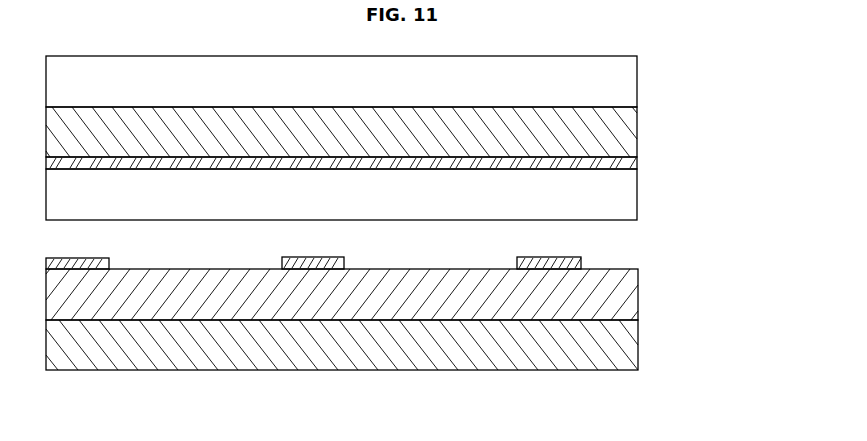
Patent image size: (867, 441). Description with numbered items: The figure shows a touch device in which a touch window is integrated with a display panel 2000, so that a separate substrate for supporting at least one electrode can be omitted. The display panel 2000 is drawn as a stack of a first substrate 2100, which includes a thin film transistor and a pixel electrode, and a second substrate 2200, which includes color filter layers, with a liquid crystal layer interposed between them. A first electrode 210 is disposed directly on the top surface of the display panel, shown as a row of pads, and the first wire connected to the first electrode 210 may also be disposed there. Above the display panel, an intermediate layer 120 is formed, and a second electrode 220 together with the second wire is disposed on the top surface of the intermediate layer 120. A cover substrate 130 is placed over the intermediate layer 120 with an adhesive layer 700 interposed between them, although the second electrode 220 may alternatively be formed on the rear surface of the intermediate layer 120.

The cover substrate 130 is at (632, 82).
The adhesive layer 700 is at (628, 132).
The second electrode 220 is at (632, 162).
The intermediate layer 120 is at (632, 194).
The second substrate 2200 is at (630, 297).
The first substrate 2100 is at (630, 343).
The display panel 2000 is at (399, 319).
The first electrode 210 is at (314, 263).